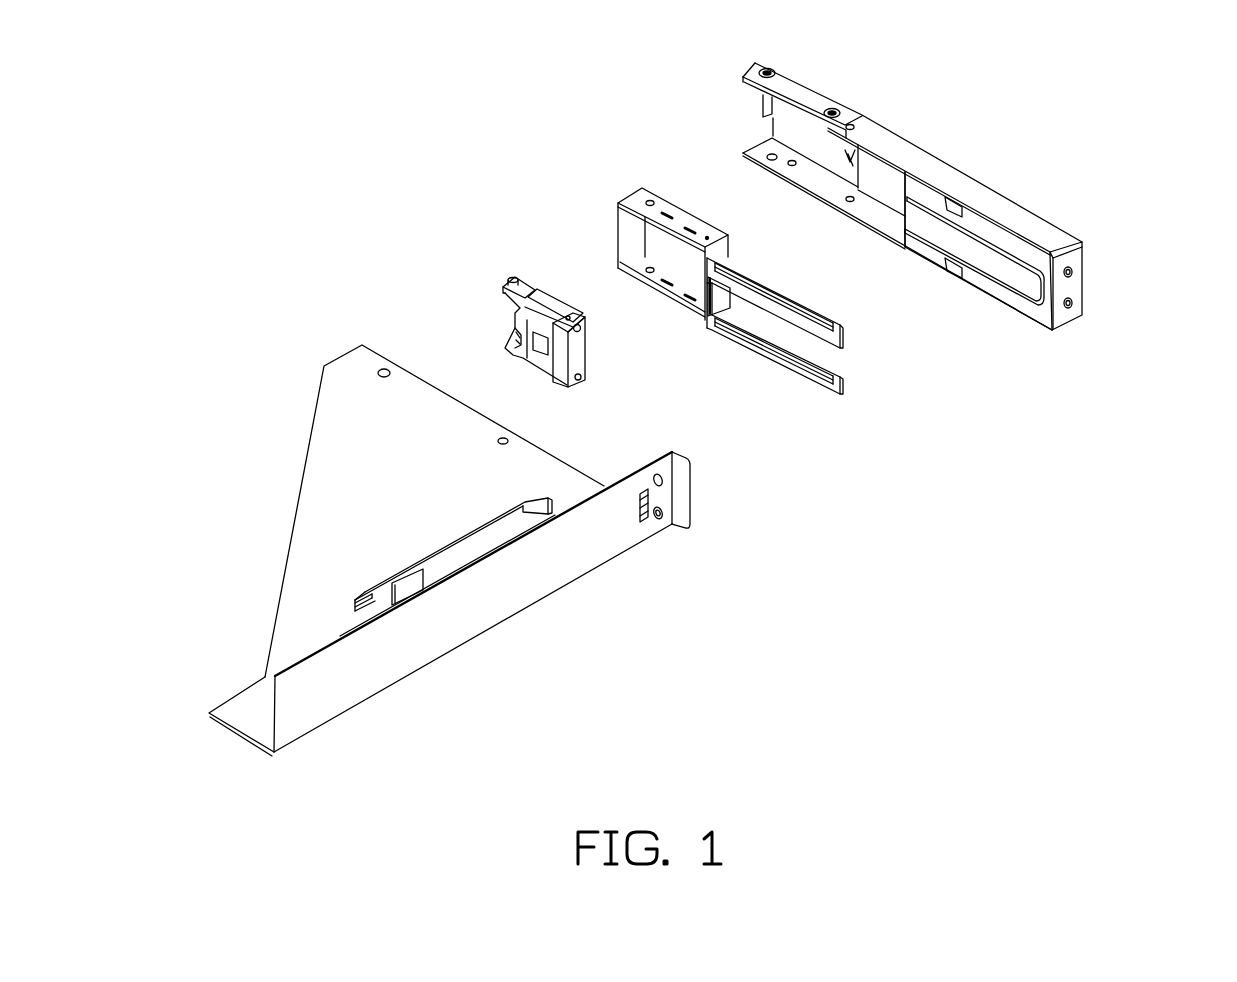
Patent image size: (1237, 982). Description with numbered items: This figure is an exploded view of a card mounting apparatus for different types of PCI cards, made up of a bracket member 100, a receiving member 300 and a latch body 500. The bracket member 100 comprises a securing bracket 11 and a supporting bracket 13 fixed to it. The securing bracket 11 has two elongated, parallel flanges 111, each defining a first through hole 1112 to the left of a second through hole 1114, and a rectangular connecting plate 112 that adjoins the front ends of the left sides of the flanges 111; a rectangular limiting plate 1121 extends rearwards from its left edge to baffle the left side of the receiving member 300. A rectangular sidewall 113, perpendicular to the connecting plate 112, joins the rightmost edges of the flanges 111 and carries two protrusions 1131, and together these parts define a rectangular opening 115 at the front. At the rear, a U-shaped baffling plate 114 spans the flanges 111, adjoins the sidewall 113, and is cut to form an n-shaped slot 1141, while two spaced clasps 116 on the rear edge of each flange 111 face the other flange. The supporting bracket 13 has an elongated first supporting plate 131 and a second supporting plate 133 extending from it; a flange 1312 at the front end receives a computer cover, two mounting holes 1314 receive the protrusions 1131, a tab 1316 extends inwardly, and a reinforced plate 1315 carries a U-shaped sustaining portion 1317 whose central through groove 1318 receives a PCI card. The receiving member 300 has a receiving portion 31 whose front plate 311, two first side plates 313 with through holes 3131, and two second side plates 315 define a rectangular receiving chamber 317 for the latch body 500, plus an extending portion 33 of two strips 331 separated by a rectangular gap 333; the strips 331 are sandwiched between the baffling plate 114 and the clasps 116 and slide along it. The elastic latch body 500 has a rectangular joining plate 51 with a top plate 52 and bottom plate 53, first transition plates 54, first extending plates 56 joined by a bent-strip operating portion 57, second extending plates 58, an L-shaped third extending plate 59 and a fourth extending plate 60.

The bracket member 100 is at (1054, 438).
The securing bracket 11 is at (1043, 343).
The flanges 111 is at (877, 145).
The first through hole 1112 is at (771, 70).
The second through hole 1114 is at (835, 112).
The limiting plate 1121 is at (763, 103).
The connecting plate 112 is at (757, 160).
The sidewall 113 is at (1085, 262).
The protrusions 1131 is at (1083, 303).
The baffling plate 114 is at (1003, 240).
The n-shaped slot 1141 is at (990, 270).
The opening 115 is at (880, 182).
The clasps 116 is at (950, 200).
The supporting bracket 13 is at (723, 472).
The first supporting plate 131 is at (508, 583).
The flange 1312 is at (688, 490).
The mounting holes 1314 is at (666, 522).
The reinforced plate 1315 is at (410, 595).
The tab 1316 is at (645, 521).
The sustaining portion 1317 is at (377, 593).
The through groove 1318 is at (357, 615).
The second supporting plate 133 is at (327, 469).
The receiving member 300 is at (614, 152).
The receiving portion 31 is at (540, 162).
The front plate 311 is at (658, 243).
The first side plates 313 is at (635, 198).
The through holes 3131 is at (650, 198).
The second side plates 315 is at (628, 257).
The receiving chamber 317 is at (685, 258).
The extending portion 33 is at (912, 337).
The strips 331 is at (840, 340).
The gap 333 is at (770, 327).
The latch body 500 is at (583, 388).
The joining plate 51 is at (540, 357).
The top plate 52 is at (552, 310).
The bottom plate 53 is at (522, 360).
The first transition plates 54 is at (538, 293).
The first extending plates 56 is at (507, 293).
The operating portion 57 is at (517, 333).
The second extending plates 58 is at (573, 317).
The third extending plate 59 is at (580, 327).
The fourth extending plate 60 is at (580, 369).